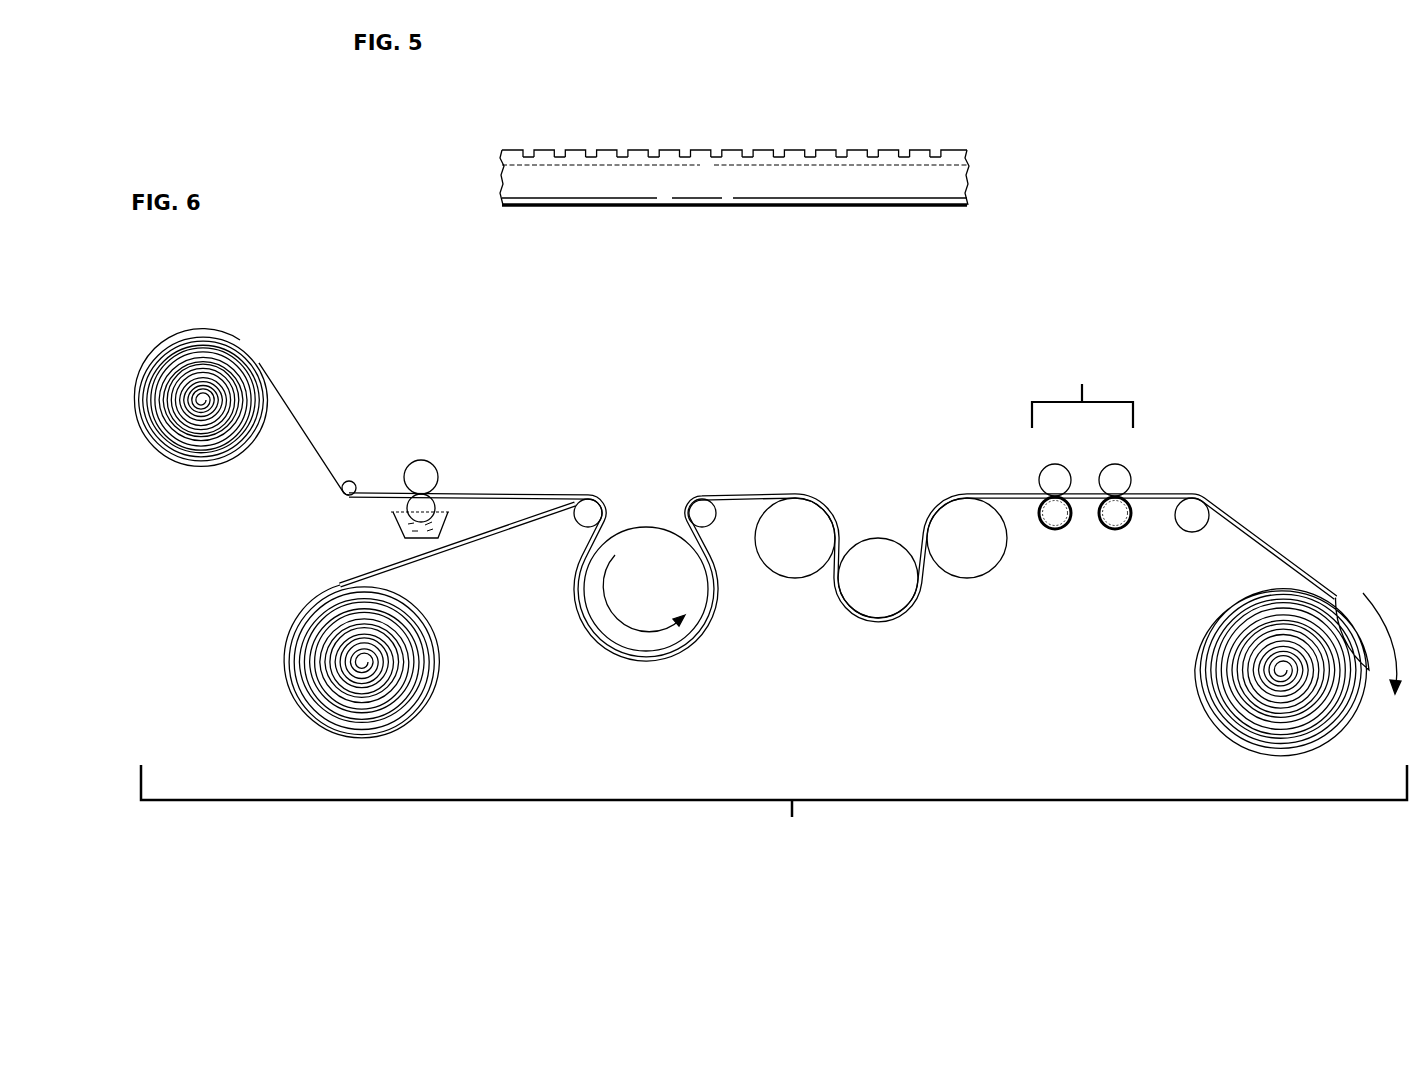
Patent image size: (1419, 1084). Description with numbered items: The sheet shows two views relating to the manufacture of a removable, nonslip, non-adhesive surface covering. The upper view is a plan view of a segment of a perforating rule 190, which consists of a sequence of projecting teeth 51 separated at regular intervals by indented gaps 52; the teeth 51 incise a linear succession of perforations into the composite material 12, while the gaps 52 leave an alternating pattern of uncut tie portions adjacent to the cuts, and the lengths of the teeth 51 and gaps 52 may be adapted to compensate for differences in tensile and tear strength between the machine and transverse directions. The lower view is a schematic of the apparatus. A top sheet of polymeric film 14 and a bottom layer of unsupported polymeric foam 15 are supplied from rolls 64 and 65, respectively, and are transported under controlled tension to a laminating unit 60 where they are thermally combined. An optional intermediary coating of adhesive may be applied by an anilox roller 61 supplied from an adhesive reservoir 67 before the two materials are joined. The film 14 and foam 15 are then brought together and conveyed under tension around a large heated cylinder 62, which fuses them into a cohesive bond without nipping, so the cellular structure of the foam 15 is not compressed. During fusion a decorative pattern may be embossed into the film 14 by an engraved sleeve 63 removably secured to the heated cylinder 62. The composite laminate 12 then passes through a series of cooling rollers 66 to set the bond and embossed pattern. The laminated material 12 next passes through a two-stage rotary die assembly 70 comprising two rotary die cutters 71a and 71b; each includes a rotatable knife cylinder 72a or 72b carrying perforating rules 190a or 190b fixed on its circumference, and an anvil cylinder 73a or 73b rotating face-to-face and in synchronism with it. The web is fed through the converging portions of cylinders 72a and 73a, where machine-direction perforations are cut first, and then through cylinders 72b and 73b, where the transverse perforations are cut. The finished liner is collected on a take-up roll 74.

In FIG. 6, the composite material 12 is at (740, 493).
In FIG. 6, the top sheet of polymeric film 14 is at (298, 409).
In FIG. 6, the bottom layer of unsupported polymeric foam 15 is at (373, 572).
In FIG. 5, the projecting teeth 51 is at (542, 149).
In FIG. 5, the indented gaps 52 is at (621, 152).
In FIG. 6, the laminating unit 60 is at (774, 803).
In FIG. 6, the anilox roller 61 is at (410, 500).
In FIG. 6, the heated cylinder 62 is at (631, 594).
In FIG. 6, the engraved sleeve 63 is at (642, 520).
In FIG. 6, the roll of polymeric film 64 is at (182, 337).
In FIG. 6, the roll of polymeric foam 65 is at (310, 706).
In FIG. 6, the cooling rollers 66 is at (784, 545).
In FIG. 6, the adhesive reservoir 67 is at (403, 533).
In FIG. 6, the two-stage rotary die assembly 70 is at (1087, 495).
In FIG. 6, the first rotary die cutter 71a is at (1019, 524).
In FIG. 6, the second rotary die cutter 71b is at (1154, 512).
In FIG. 6, the first knife cylinder 72a is at (1058, 520).
In FIG. 6, the second knife cylinder 72b is at (1112, 520).
In FIG. 6, the first anvil cylinder 73a is at (1050, 478).
In FIG. 6, the second anvil cylinder 73b is at (1120, 478).
In FIG. 6, the take-up roll 74 is at (1328, 730).
In FIG. 5, the perforating rule 190 is at (705, 190).
In FIG. 6, the first perforating rules 190a is at (1048, 525).
In FIG. 6, the second perforating rules 190b is at (1125, 520).